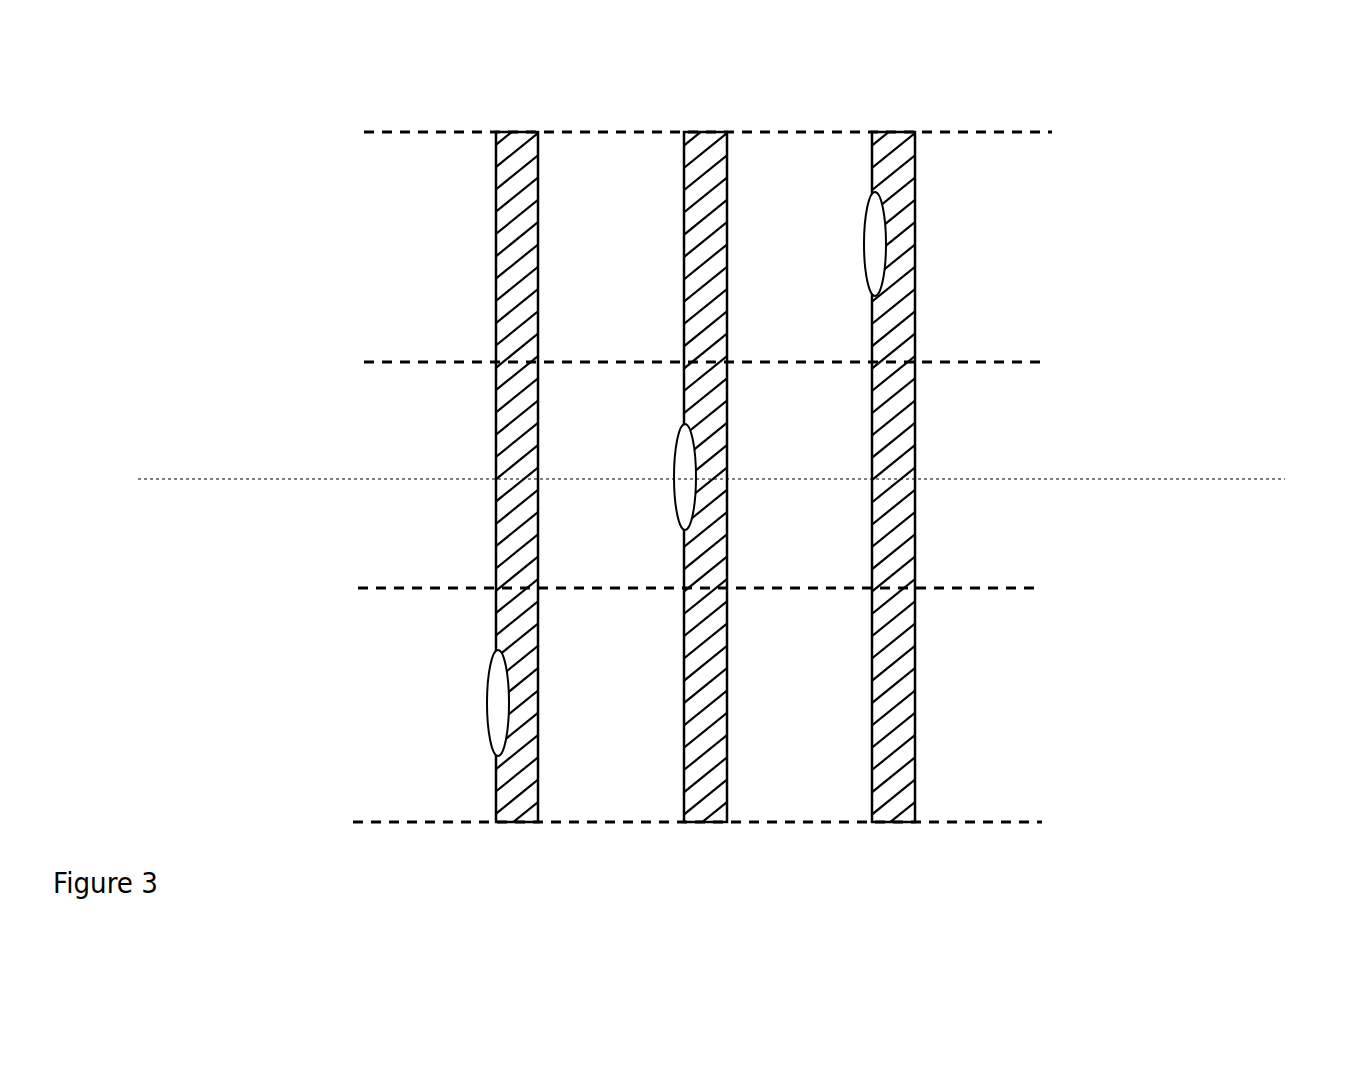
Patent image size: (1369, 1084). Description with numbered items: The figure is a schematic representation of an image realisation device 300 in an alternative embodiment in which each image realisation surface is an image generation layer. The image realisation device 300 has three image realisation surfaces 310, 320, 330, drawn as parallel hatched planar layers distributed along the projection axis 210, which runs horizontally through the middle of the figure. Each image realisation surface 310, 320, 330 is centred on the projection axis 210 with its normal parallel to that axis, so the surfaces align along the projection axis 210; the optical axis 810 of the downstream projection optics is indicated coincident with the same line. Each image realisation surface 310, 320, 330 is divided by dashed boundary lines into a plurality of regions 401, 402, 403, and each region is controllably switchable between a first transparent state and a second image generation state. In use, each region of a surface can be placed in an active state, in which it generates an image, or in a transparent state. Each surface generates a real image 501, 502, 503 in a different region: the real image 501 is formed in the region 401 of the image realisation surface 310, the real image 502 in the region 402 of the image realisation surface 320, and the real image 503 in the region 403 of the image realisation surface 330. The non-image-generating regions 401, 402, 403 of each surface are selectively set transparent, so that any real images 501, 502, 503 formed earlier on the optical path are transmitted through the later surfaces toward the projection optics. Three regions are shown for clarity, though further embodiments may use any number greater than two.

The image realisation device 300 is at (704, 459).
The image realisation surface 310 is at (881, 469).
The image realisation surface 320 is at (692, 469).
The image realisation surface 330 is at (504, 469).
The region 401 is at (1048, 192).
The region 402 is at (1048, 418).
The region 403 is at (1048, 645).
The real image 501 is at (864, 248).
The real image 502 is at (674, 486).
The real image 503 is at (487, 721).
The projection axis 210 is at (1240, 478).
The optical axis 810 is at (283, 478).